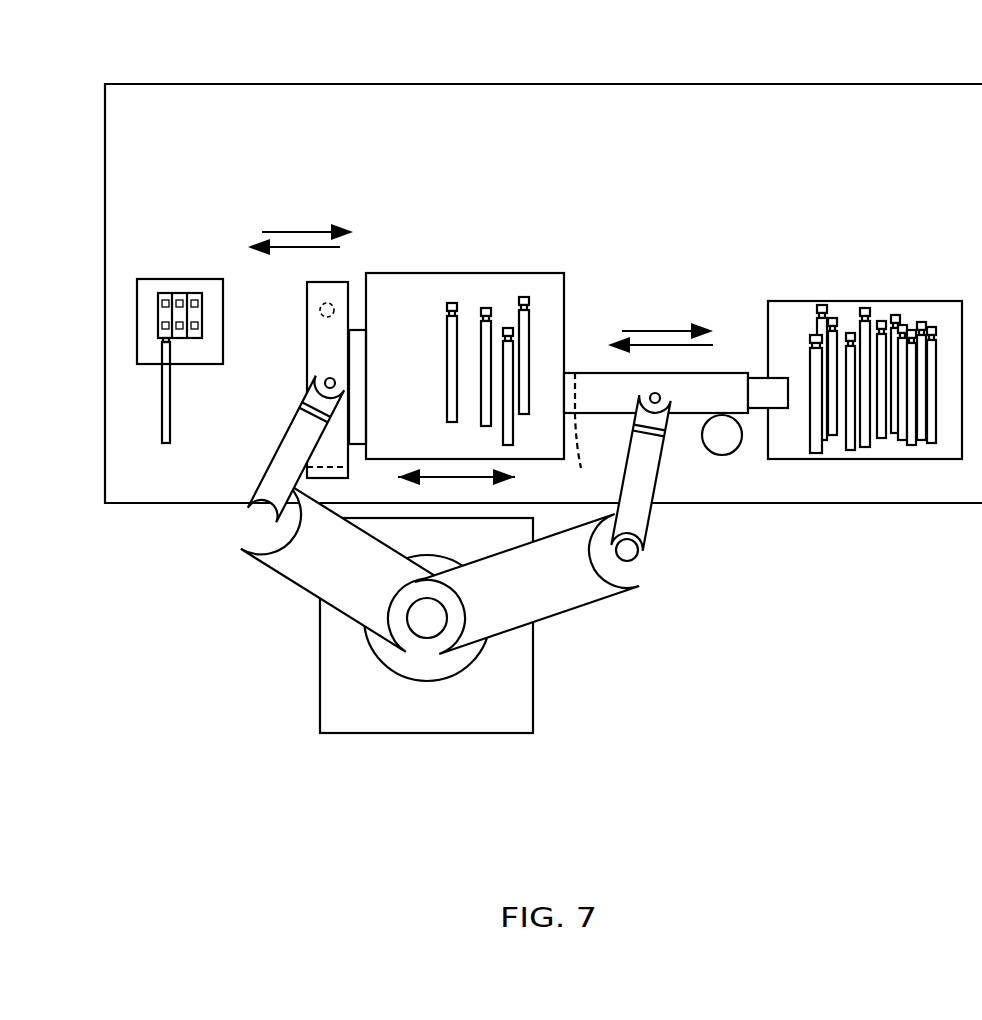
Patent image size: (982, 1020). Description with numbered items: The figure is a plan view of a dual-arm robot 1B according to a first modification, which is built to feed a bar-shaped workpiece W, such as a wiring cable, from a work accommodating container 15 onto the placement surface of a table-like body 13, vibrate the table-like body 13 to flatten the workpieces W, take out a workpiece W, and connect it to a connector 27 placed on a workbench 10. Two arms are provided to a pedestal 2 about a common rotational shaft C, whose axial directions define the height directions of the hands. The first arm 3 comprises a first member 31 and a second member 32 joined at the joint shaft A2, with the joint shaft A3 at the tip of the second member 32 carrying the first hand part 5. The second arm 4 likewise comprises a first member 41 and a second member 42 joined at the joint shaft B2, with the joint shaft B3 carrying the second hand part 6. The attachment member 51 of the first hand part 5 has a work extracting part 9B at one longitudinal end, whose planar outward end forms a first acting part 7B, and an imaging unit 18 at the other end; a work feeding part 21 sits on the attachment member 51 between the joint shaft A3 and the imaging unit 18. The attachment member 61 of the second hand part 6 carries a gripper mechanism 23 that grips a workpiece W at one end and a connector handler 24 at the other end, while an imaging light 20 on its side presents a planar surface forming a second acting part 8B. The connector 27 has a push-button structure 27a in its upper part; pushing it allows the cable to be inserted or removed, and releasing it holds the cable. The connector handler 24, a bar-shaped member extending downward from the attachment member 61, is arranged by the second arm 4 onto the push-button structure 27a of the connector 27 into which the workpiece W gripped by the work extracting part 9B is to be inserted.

The robot 1B is at (401, 838).
The workbench 10 is at (905, 100).
The connector 27 is at (119, 355).
The push-button structure 27a is at (160, 325).
The workpiece W is at (165, 415).
The work accommodating container 15 is at (912, 308).
The attachment member 61 is at (321, 389).
The gripper mechanism 23 is at (320, 470).
The connector handler 24 is at (315, 305).
The imaging light 20 is at (358, 405).
The table-like body 13 is at (496, 282).
The second acting part 8B is at (379, 341).
The second hand part 6 is at (306, 212).
The first hand part 5 is at (671, 303).
The attachment member 51 is at (710, 383).
The imaging unit 18 is at (777, 392).
The work feeding part 21 is at (720, 438).
The first acting part 7B is at (585, 392).
The work extracting part 9B is at (580, 437).
The pedestal 2 is at (415, 680).
The second arm 4 is at (305, 546).
The first member 41 is at (295, 562).
The second member 42 is at (295, 450).
The joint shaft B3 is at (325, 382).
The joint shaft B2 is at (260, 520).
The first arm 3 is at (580, 546).
The first member 31 is at (583, 590).
The second member 32 is at (648, 480).
The joint shaft A3 is at (650, 400).
The joint shaft A2 is at (628, 556).
The rotational shaft C is at (432, 625).